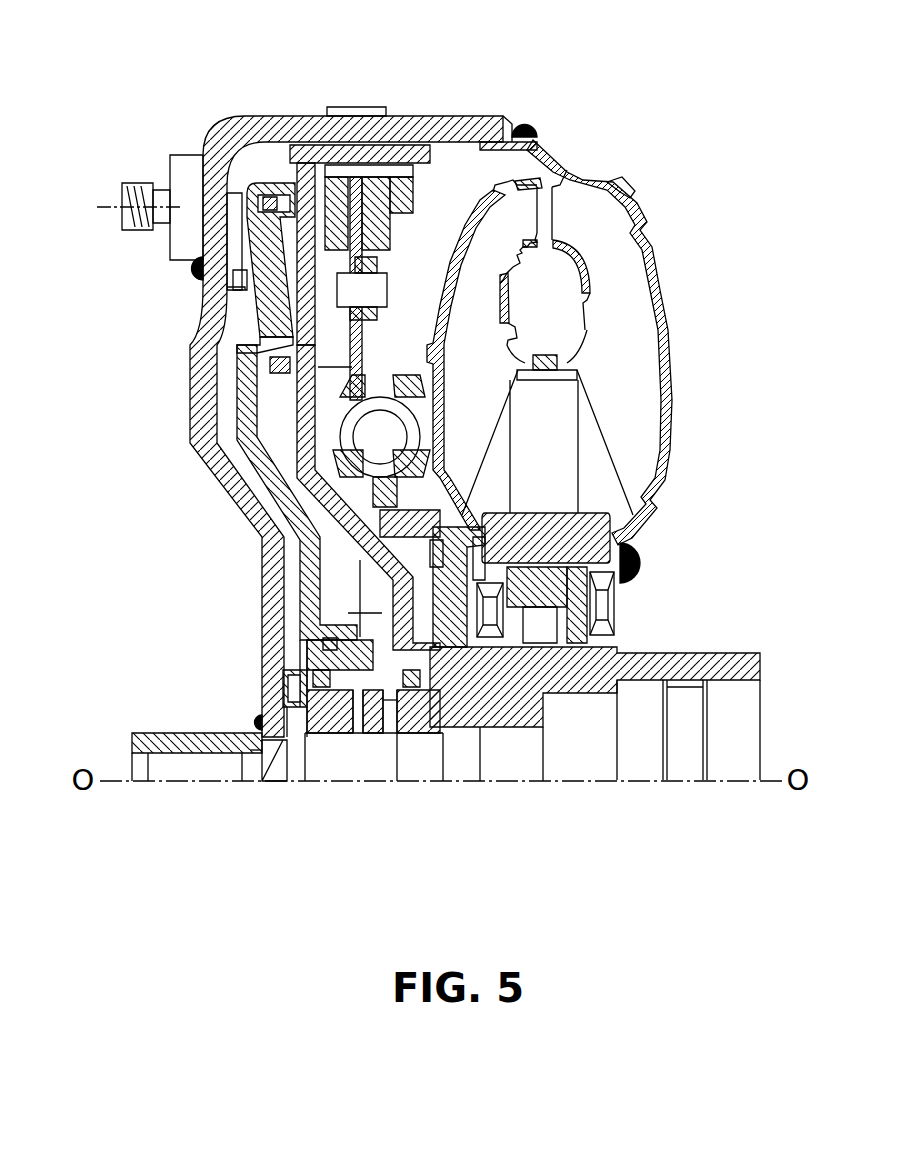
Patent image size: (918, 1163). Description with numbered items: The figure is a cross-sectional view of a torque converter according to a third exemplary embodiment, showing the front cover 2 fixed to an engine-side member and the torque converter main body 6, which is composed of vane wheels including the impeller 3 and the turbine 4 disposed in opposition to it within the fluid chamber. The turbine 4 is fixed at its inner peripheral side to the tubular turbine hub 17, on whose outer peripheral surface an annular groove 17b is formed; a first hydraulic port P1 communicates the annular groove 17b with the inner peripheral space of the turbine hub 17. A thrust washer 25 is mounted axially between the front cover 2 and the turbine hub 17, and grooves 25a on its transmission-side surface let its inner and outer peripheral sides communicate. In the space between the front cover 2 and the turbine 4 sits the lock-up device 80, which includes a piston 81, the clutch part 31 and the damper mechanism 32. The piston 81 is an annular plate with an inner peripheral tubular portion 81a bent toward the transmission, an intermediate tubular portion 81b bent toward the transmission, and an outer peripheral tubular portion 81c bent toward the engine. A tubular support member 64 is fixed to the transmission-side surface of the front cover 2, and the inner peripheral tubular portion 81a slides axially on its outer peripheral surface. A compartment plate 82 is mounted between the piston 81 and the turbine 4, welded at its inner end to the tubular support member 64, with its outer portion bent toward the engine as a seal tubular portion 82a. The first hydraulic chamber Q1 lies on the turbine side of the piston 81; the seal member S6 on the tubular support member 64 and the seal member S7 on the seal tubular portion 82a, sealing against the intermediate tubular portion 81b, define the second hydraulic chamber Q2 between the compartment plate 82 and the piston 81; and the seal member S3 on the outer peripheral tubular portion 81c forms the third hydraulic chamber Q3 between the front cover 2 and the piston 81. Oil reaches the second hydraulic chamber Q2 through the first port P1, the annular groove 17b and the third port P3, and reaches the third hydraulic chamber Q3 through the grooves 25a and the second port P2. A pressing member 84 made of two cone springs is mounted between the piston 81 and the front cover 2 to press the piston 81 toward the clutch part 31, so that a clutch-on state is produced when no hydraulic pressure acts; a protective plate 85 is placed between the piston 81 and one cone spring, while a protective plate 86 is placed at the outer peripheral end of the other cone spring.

The front cover 2 is at (188, 372).
The impeller 3 is at (628, 254).
The turbine 4 is at (532, 201).
The torque converter main body 6 is at (532, 148).
The turbine hub 17 is at (532, 757).
The annular groove 17b is at (367, 733).
The thrust washer 25 is at (283, 697).
The grooves 25a is at (307, 712).
The clutch part 31 is at (441, 188).
The damper mechanism 32 is at (439, 428).
The tubular support member 64 is at (273, 648).
The lock-up device 80 is at (441, 157).
The piston 81 is at (217, 337).
The inner peripheral tubular portion 81a is at (343, 633).
The intermediate tubular portion 81b is at (273, 333).
The outer peripheral tubular portion 81c is at (270, 180).
The compartment plate 82 is at (275, 406).
The seal tubular portion 82a is at (277, 377).
The pressing member 84 is at (247, 275).
The protective plate 85 is at (365, 107).
The protective plate 86 is at (227, 207).
The first hydraulic port P1 is at (337, 733).
The second port P2 is at (300, 660).
The third port P3 is at (380, 733).
The first hydraulic chamber Q1 is at (334, 352).
The second hydraulic chamber Q2 is at (364, 598).
The third hydraulic chamber Q3 is at (252, 481).
The seal member S3 is at (283, 187).
The seal member S6 is at (317, 637).
The seal member S7 is at (270, 358).